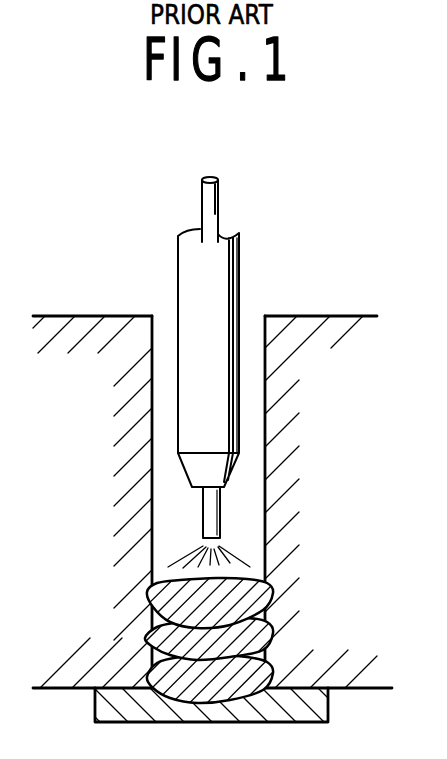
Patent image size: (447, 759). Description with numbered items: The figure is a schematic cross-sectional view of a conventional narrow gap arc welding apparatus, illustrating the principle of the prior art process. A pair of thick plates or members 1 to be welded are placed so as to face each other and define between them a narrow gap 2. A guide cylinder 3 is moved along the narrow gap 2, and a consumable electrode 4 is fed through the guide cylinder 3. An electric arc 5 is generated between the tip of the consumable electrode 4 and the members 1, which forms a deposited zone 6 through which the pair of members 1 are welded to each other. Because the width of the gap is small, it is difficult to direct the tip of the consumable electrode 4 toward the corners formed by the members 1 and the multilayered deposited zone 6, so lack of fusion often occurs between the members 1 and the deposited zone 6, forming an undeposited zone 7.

The members to be welded 1 is at (76, 326).
The narrow gap 2 is at (165, 328).
The guide cylinder 3 is at (225, 283).
The consumable electrode 4 is at (212, 204).
The electric arc 5 is at (188, 555).
The deposited zone 6 is at (233, 588).
The undeposited zone 7 is at (268, 614).